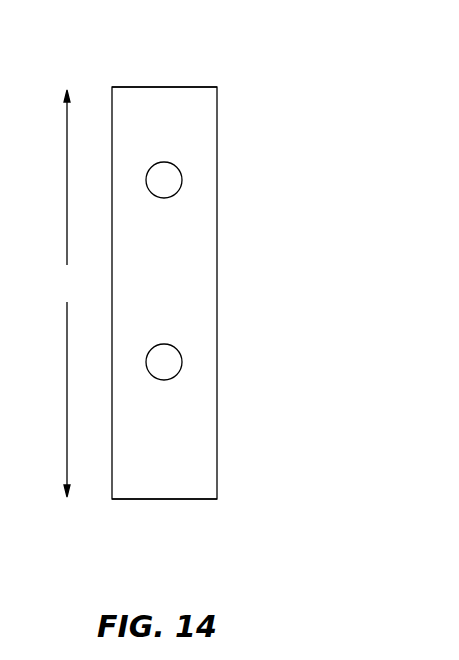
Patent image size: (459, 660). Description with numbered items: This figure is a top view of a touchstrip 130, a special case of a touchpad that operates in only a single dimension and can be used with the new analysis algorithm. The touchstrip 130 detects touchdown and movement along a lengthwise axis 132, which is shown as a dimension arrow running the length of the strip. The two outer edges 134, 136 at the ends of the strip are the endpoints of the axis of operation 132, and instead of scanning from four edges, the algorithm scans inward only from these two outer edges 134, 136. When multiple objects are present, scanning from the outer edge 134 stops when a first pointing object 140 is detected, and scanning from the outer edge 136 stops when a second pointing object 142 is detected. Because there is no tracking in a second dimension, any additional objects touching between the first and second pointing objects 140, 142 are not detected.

The touchstrip 130 is at (218, 433).
The lengthwise axis 132 is at (68, 293).
The outer edge 134 is at (175, 499).
The outer edge 136 is at (177, 87).
The first pointing object 140 is at (183, 358).
The second pointing object 142 is at (184, 187).